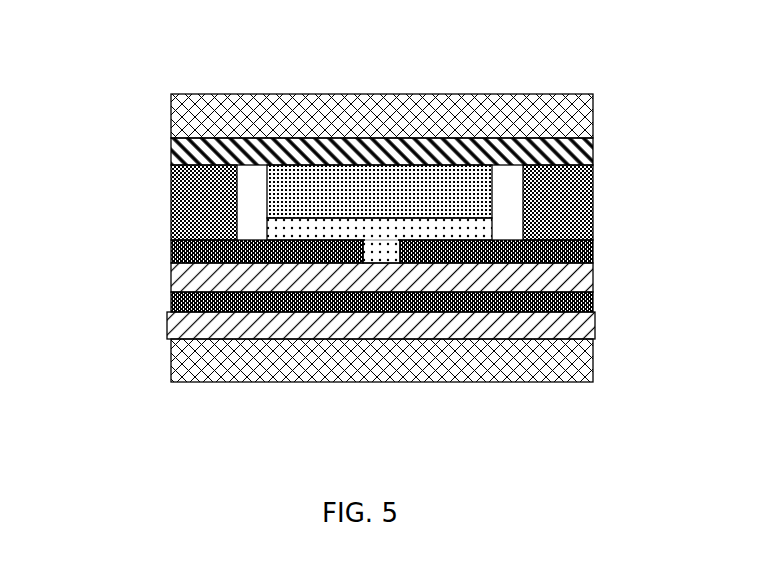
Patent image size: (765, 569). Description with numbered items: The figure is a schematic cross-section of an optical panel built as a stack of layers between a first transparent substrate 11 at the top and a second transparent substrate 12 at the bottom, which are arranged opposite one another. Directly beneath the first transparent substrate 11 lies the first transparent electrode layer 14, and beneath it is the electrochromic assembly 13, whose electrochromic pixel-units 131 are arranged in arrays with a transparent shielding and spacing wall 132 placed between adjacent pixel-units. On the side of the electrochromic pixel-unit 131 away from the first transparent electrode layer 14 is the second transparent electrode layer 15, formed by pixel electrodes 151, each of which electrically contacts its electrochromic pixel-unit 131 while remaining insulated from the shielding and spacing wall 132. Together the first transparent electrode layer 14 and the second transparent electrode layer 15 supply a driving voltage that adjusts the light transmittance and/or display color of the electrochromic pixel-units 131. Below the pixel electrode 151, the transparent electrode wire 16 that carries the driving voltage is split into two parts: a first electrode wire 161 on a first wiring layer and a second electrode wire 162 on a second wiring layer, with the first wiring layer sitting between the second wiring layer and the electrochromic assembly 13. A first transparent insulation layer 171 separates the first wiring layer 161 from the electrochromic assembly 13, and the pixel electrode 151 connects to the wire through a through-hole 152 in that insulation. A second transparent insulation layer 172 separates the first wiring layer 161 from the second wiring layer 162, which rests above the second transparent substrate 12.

The first transparent substrate 11 is at (280, 92).
The second transparent substrate 12 is at (211, 372).
The electrochromic assembly 13 is at (375, 177).
The electrochromic pixel-unit 131 is at (281, 179).
The transparent shielding and spacing wall 132 is at (197, 209).
The first transparent electrode layer 14 is at (440, 137).
The second transparent electrode layer 15 is at (314, 220).
The pixel electrode 151 is at (294, 233).
The through-hole 152 is at (386, 256).
The transparent electrode wire 16 is at (413, 355).
The first electrode wire 161 is at (490, 291).
The second electrode wire 162 is at (301, 335).
The first transparent insulation layer 171 is at (170, 247).
The second transparent insulation layer 172 is at (570, 318).